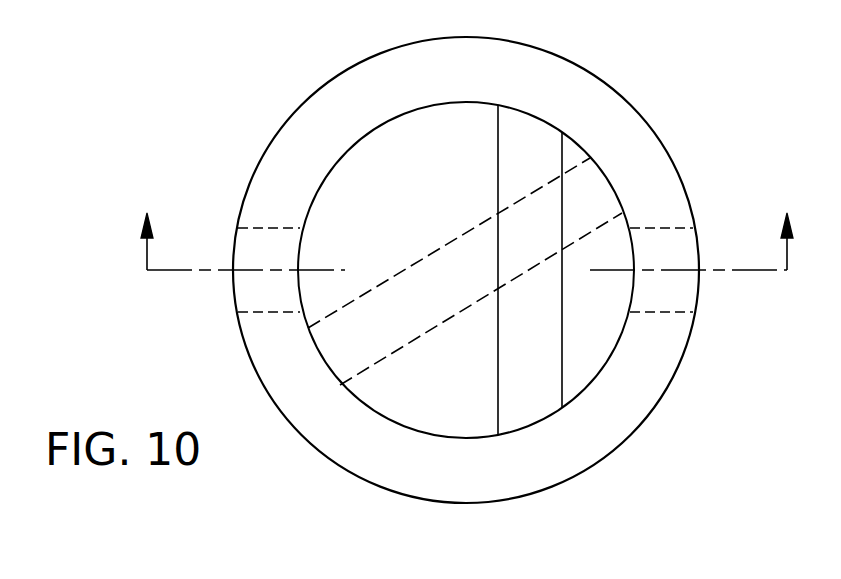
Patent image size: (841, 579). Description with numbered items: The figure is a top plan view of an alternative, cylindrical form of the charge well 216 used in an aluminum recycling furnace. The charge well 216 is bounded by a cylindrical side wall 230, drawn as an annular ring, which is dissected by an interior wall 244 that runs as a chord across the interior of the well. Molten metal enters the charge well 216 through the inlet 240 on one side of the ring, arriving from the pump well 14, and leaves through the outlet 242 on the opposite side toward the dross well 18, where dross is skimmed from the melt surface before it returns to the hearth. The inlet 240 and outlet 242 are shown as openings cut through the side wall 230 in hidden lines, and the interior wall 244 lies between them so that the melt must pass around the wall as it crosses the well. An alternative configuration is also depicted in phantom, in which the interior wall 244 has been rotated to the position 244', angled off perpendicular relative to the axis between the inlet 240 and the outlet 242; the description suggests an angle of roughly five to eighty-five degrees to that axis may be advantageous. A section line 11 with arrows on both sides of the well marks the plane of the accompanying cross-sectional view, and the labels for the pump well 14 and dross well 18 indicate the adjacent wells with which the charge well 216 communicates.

The cylindrical side wall 230 is at (335, 92).
The charge well 216 is at (456, 392).
The interior wall 244 is at (604, 242).
The interior wall position 244' is at (465, 356).
The outlet 242 is at (233, 248).
The inlet 240 is at (700, 247).
The dross well 18 is at (198, 321).
The pump well 14 is at (758, 317).
The section line 11- 11 is at (471, 222).